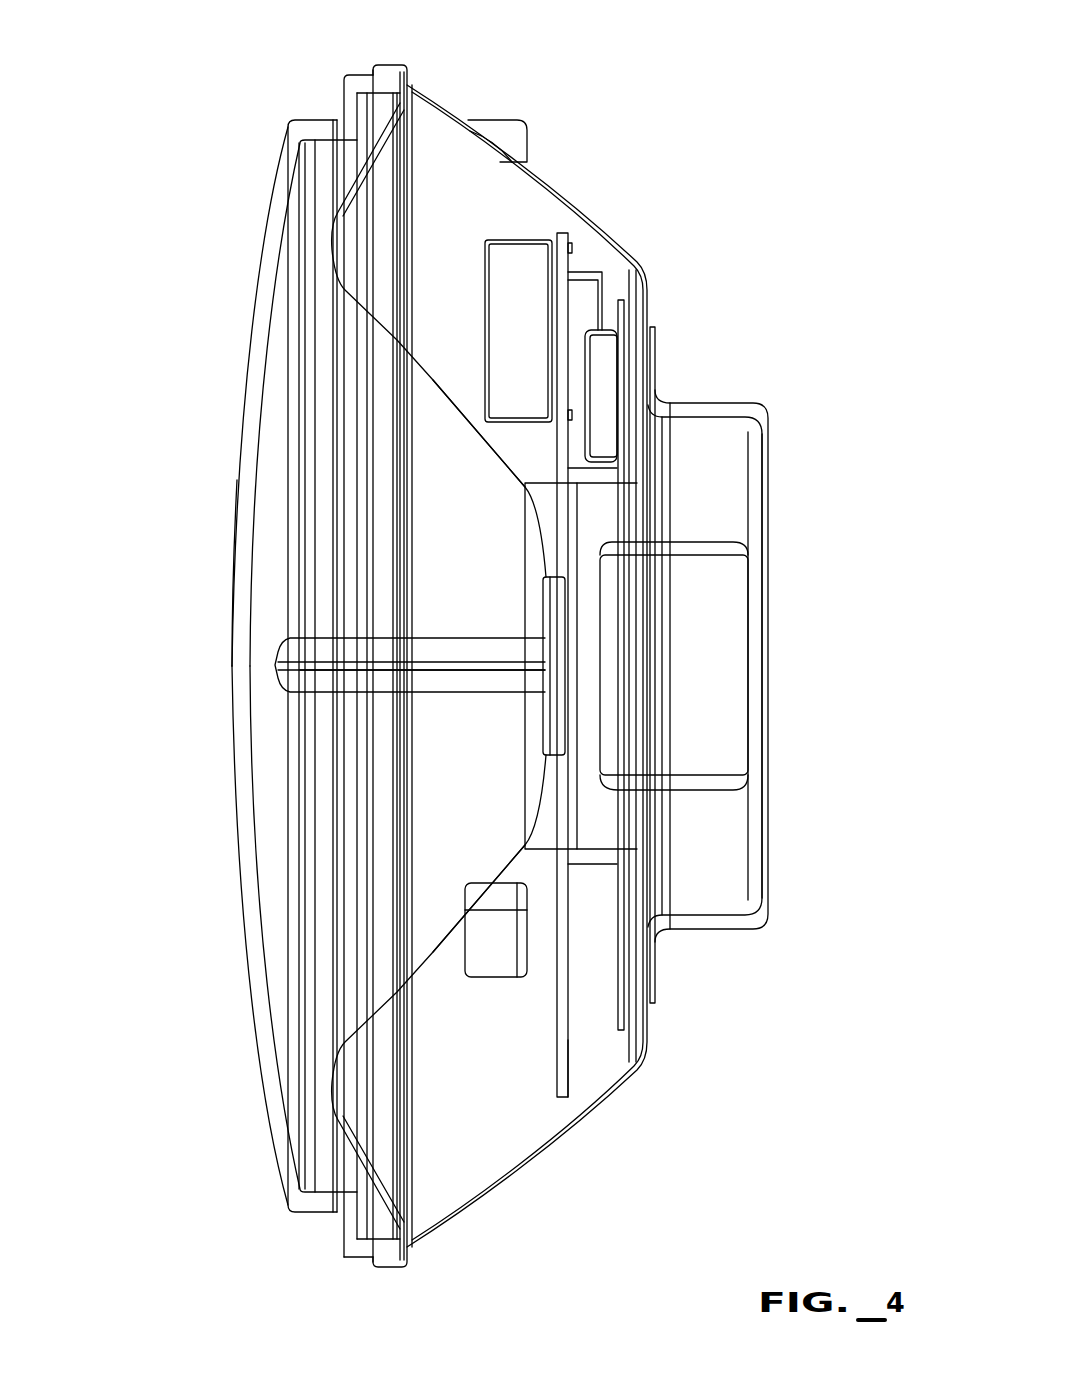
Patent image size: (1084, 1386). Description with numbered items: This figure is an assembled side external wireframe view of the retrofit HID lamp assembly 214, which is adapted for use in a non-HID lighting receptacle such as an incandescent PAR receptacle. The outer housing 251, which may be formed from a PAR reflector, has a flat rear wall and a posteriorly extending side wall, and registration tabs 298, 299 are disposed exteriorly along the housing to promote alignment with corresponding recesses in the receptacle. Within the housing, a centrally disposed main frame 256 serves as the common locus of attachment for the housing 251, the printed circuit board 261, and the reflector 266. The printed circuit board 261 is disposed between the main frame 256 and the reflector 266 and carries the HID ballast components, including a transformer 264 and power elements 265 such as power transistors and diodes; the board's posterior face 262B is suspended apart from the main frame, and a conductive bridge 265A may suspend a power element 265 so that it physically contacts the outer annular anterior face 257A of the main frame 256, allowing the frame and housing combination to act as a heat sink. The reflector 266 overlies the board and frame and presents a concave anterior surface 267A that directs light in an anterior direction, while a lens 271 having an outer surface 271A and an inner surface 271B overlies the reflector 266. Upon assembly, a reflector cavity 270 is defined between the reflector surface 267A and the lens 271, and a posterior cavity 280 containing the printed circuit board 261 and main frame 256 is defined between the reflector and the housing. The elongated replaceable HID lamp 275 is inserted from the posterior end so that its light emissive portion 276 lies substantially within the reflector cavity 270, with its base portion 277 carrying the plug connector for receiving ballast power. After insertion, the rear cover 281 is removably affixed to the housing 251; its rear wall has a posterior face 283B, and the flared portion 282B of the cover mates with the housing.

The retrofit HID lamp assembly 214 is at (132, 66).
The housing 251 is at (523, 1170).
The main frame 256 is at (597, 852).
The outer annular anterior face 257A is at (612, 950).
The printed circuit board 261 is at (563, 1096).
The posterior face 262B is at (568, 1066).
The transformer 264 is at (512, 262).
The power element 265 is at (605, 345).
The conductive bridge 265A is at (587, 278).
The reflector 266 is at (505, 848).
The concave anterior surface 267A is at (487, 455).
The reflector cavity 270 is at (450, 752).
The lens 271 is at (268, 293).
The outer surface 271A is at (245, 407).
The inner surface 271B is at (257, 478).
The HID lamp 275 is at (280, 681).
The light emissive portion 276 is at (430, 682).
The base portion 277 is at (700, 638).
The posterior cavity 280 is at (443, 162).
The rear cover 281 is at (718, 402).
The housing plate 282B is at (655, 330).
The posterior face 283B is at (770, 455).
The registration tab 298 is at (505, 127).
The registration tab 299 is at (493, 940).